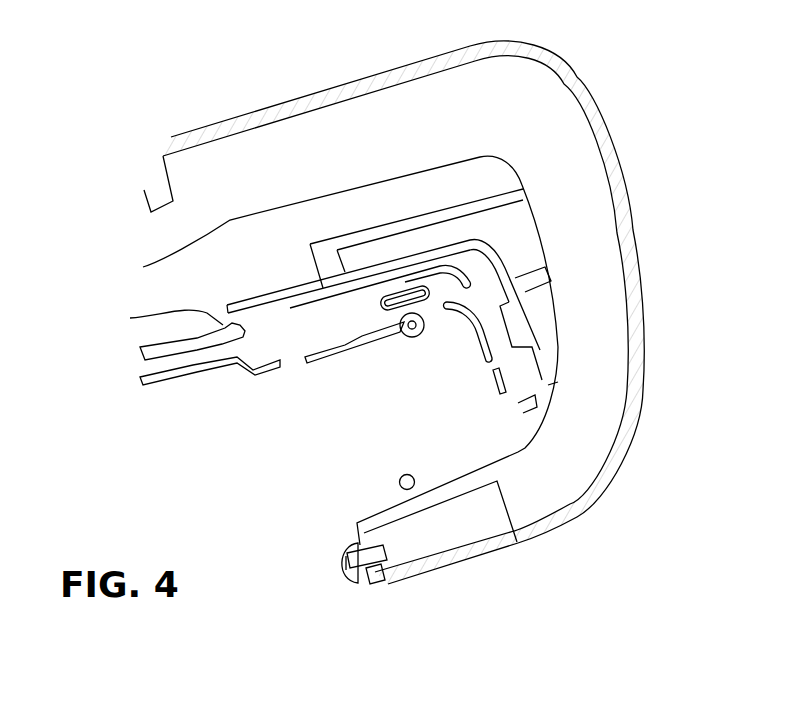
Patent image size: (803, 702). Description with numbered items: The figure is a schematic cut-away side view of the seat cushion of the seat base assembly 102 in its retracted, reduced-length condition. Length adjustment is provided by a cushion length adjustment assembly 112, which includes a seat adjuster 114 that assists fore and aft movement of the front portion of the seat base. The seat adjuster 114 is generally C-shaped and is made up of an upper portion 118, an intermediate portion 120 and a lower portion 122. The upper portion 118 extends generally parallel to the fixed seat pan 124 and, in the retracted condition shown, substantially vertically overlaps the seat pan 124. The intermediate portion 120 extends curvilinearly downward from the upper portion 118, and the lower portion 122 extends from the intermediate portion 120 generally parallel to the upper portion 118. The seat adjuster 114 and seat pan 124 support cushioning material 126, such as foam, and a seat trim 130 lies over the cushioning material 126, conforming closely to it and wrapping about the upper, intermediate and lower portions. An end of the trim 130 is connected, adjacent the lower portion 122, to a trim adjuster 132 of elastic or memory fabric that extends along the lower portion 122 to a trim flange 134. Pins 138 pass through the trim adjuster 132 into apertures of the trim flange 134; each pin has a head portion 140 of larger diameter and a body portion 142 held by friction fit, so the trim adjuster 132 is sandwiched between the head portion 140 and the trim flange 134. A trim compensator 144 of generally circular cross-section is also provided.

The seat base assembly 102 is at (595, 92).
The cushion length adjustment assembly 112 is at (500, 245).
The seat adjuster 114 is at (512, 270).
The upper portion 118 is at (452, 245).
The intermediate portion 120 is at (547, 327).
The lower portion 122 is at (456, 478).
The seat pan 124 is at (222, 325).
The cushioning material 126 is at (482, 95).
The seat trim 130 is at (230, 118).
The trim adjuster 132 is at (496, 568).
The trim flange 134 is at (380, 578).
The pin 138 is at (348, 585).
The head portion 140 is at (337, 565).
The body portion 142 is at (358, 548).
The trim compensator 144 is at (400, 478).